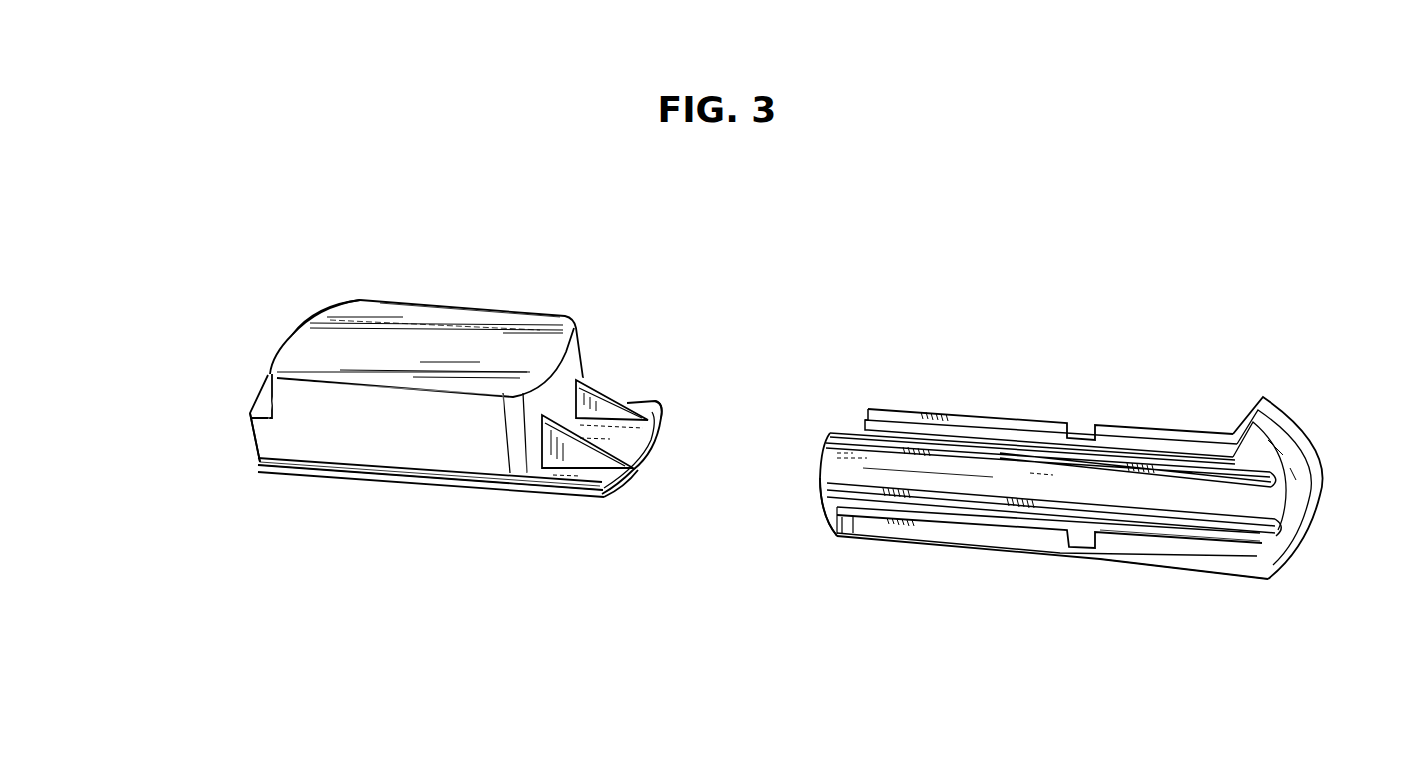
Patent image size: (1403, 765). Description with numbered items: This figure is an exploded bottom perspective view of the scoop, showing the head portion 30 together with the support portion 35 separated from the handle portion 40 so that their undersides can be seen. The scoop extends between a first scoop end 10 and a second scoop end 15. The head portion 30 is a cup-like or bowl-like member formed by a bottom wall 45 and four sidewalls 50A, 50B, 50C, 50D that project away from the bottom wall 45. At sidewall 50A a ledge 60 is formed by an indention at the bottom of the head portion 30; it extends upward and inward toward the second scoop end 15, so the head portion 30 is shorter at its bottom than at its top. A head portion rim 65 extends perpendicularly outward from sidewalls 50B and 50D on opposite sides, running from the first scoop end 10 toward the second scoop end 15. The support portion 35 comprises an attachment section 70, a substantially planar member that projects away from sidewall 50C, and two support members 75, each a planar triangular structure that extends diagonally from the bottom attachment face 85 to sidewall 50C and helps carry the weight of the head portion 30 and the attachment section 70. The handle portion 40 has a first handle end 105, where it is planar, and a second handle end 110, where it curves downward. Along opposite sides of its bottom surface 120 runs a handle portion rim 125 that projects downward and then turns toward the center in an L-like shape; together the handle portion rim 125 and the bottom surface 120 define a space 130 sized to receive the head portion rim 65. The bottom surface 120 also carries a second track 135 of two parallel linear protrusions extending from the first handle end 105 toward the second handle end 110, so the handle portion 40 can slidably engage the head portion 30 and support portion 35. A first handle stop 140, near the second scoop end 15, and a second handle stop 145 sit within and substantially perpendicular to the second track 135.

The first scoop end 10 is at (247, 432).
The second scoop end 15 is at (645, 400).
The head portion 30 is at (317, 468).
The support portion 35 is at (648, 459).
The handle portion 40 is at (1187, 414).
The bottom wall 45 is at (360, 340).
The sidewall 50A is at (250, 450).
The sidewall 50B is at (426, 303).
The sidewall 50C is at (572, 418).
The sidewall 50D is at (440, 448).
The ledge 60 is at (296, 330).
The head portion rim 65 is at (370, 478).
The attachment section 70 is at (660, 397).
The support member 75 is at (587, 460).
The bottom attachment face 85 is at (608, 498).
The first handle end 105 is at (887, 530).
The second handle end 110 is at (1270, 579).
The bottom surface 120 is at (1060, 487).
The handle portion rim 125 is at (979, 416).
The space 130 is at (908, 408).
The second track 135 is at (975, 462).
The first handle stop 140 is at (1207, 503).
The second handle stop 145 is at (837, 472).